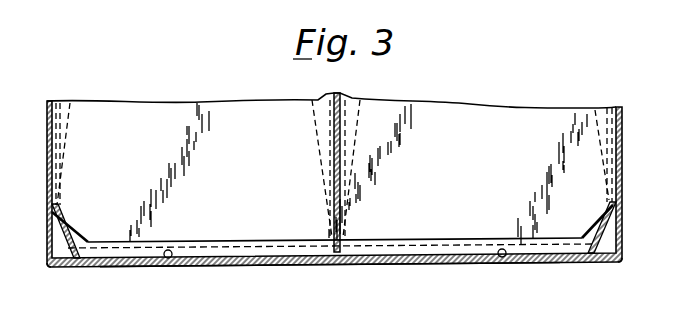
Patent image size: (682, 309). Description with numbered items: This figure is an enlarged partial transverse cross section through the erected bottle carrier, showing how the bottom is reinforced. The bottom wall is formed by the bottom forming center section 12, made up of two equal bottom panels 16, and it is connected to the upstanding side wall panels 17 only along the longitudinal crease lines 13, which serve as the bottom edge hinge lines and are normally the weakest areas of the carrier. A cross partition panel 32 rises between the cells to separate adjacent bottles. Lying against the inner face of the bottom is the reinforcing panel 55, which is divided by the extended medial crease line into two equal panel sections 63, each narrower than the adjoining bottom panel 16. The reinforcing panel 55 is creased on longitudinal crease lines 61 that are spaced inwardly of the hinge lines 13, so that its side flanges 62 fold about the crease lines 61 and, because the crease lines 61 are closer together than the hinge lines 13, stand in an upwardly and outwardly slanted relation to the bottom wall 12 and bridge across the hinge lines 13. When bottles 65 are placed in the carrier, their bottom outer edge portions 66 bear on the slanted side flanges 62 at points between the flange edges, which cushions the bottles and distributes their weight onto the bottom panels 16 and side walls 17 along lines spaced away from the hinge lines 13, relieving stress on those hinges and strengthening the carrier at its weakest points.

The bottom forming center section 12 is at (440, 263).
The longitudinal crease lines 13 is at (50, 250).
The bottom panels 16 is at (283, 265).
The side wall panels 17 is at (47, 158).
The cross partition panel 32 is at (228, 104).
The reinforcing panel 55 is at (168, 258).
The crease lines 61 is at (80, 252).
The side flanges 62 is at (62, 217).
The panel sections 63 is at (503, 257).
The bottles 65 is at (67, 104).
The bottom outer edge portions 66 is at (60, 228).